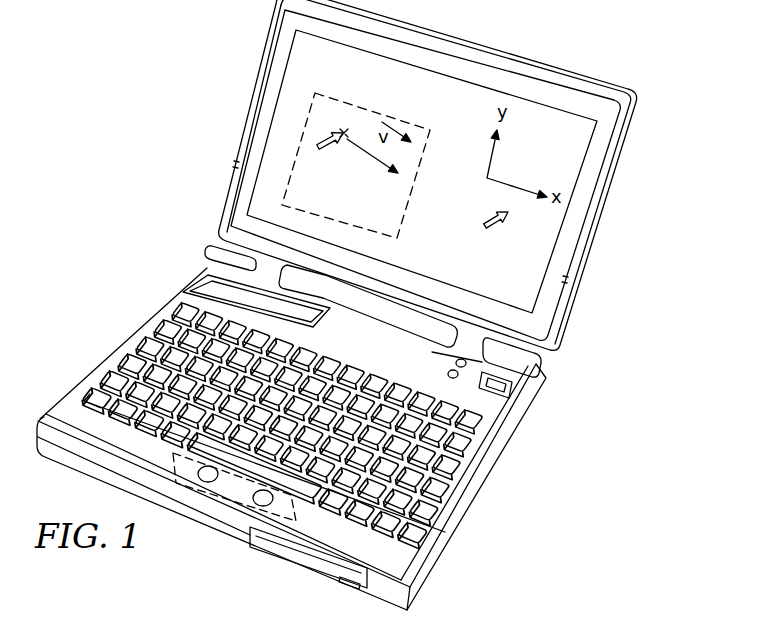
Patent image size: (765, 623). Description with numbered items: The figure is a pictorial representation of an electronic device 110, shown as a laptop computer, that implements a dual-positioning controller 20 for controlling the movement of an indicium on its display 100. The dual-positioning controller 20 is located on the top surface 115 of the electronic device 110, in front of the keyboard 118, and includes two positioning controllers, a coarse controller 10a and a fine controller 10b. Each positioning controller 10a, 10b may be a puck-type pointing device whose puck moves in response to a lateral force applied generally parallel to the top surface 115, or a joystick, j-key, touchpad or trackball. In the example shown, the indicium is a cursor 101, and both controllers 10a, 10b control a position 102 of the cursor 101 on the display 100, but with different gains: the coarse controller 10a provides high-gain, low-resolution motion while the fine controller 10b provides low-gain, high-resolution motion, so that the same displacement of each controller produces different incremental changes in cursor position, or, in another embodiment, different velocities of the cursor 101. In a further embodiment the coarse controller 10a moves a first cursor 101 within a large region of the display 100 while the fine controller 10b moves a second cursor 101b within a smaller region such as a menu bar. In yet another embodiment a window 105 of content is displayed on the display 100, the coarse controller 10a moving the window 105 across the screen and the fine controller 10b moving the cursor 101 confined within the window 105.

The display 100 is at (268, 100).
The electronic device 110 is at (607, 191).
The window 105 is at (410, 192).
The cursor 101 is at (326, 148).
The position 102 is at (346, 130).
The second cursor 101b is at (492, 232).
The keyboard 118 is at (120, 367).
The top surface 115 is at (500, 470).
The dual-positioning controller 20 is at (229, 499).
The coarse controller 10a is at (185, 465).
The fine controller 10b is at (280, 508).